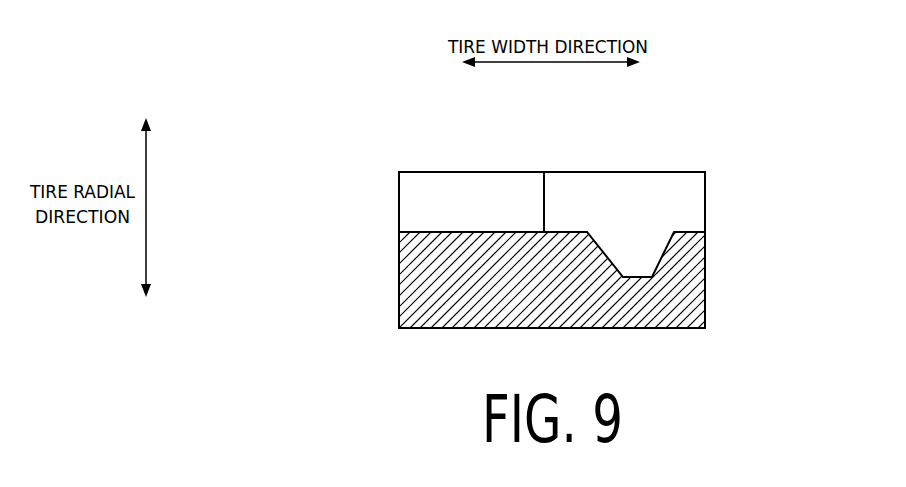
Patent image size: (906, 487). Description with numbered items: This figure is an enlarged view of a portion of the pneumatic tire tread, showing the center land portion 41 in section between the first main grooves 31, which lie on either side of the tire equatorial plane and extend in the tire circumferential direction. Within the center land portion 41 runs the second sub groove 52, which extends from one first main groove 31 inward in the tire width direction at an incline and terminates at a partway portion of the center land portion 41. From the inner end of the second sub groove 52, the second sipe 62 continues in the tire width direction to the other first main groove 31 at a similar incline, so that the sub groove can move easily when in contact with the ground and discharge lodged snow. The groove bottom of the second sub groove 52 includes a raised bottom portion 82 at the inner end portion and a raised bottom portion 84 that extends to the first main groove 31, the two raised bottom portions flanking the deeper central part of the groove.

The first main groove 31 is at (352, 303).
The center land portion 41 is at (470, 172).
The second sipe 62 is at (408, 196).
The second sub groove 52 is at (629, 193).
The raised bottom portion 82 is at (566, 232).
The raised bottom portion 84 is at (690, 232).